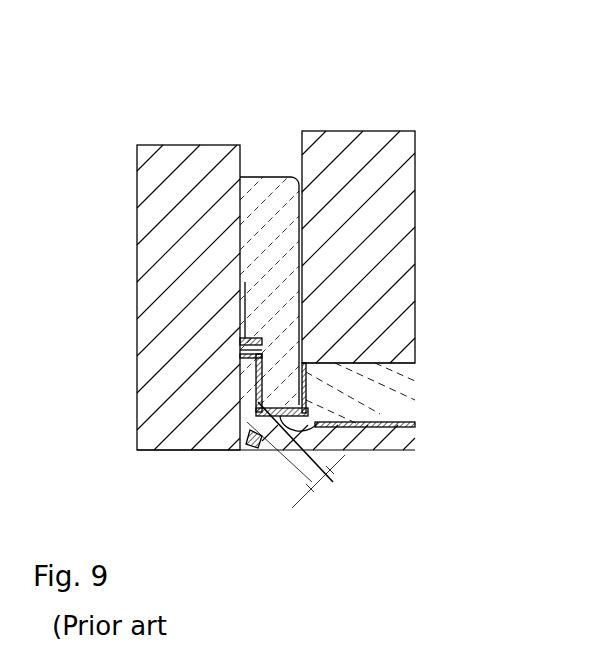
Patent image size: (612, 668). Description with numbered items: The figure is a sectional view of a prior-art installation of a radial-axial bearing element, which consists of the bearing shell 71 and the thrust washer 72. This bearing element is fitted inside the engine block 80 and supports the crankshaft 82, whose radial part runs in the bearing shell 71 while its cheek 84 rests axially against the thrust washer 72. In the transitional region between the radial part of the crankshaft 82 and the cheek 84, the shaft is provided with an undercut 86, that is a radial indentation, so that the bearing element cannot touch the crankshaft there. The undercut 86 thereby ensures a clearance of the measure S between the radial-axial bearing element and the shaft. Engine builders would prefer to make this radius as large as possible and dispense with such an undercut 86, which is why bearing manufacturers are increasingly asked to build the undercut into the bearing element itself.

The thrust washer 72 is at (264, 205).
The cheek 84 is at (180, 250).
The engine block 80 is at (370, 255).
The bearing shell 71 is at (372, 400).
The crankshaft 82 is at (400, 442).
The undercut 86 is at (252, 448).